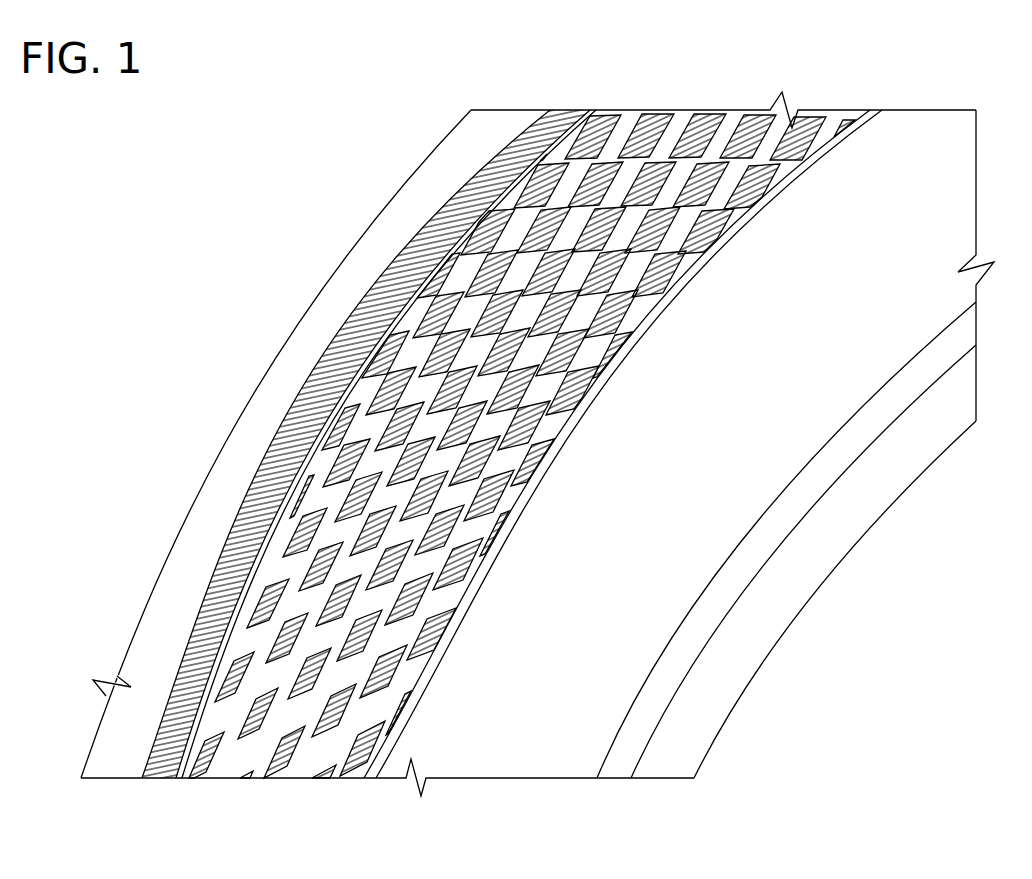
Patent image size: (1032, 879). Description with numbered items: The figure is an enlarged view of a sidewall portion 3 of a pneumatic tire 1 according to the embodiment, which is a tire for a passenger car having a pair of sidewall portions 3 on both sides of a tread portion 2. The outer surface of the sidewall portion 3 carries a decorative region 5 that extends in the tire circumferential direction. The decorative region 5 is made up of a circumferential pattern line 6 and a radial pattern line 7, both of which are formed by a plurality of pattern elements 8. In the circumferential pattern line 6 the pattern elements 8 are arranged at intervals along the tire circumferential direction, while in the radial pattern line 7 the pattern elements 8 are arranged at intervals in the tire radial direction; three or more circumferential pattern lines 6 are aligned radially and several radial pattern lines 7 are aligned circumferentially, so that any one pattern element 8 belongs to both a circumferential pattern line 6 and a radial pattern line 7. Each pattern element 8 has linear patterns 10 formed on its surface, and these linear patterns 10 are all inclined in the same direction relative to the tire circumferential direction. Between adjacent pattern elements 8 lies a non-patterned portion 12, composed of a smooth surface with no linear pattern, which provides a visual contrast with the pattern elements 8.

The pneumatic tire 1 is at (316, 216).
The tread portion 2 is at (418, 152).
The sidewall portion 3 is at (937, 100).
The decorative region 5 is at (840, 50).
The circumferential pattern line 6 is at (601, 135).
The radial pattern line 7 is at (424, 331).
The pattern element 8 is at (590, 188).
The linear pattern 10 is at (217, 738).
The non-patterned portion 12 is at (490, 285).